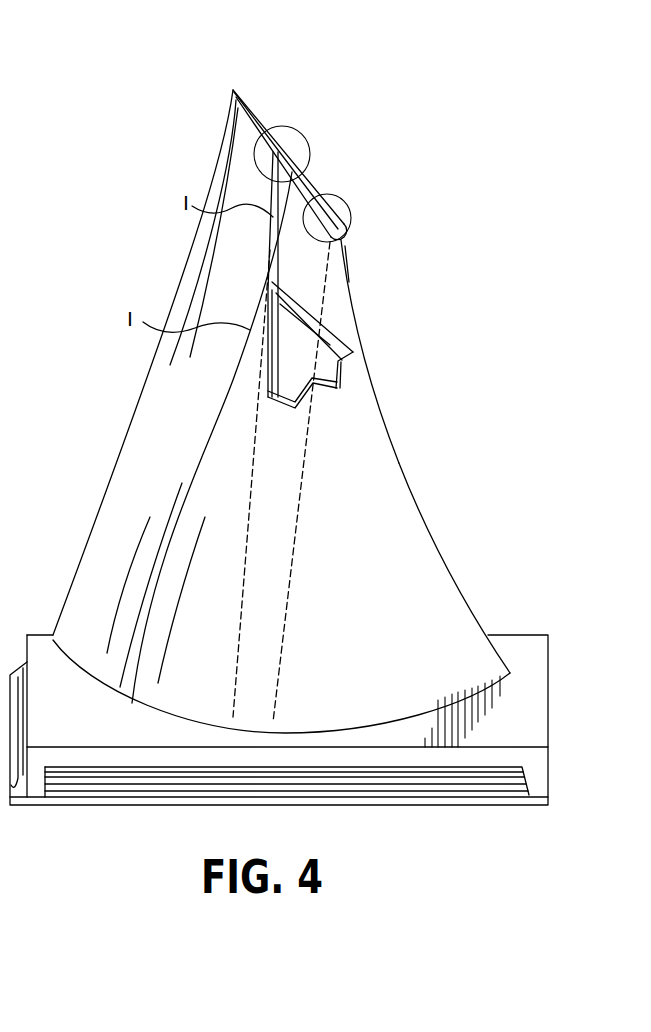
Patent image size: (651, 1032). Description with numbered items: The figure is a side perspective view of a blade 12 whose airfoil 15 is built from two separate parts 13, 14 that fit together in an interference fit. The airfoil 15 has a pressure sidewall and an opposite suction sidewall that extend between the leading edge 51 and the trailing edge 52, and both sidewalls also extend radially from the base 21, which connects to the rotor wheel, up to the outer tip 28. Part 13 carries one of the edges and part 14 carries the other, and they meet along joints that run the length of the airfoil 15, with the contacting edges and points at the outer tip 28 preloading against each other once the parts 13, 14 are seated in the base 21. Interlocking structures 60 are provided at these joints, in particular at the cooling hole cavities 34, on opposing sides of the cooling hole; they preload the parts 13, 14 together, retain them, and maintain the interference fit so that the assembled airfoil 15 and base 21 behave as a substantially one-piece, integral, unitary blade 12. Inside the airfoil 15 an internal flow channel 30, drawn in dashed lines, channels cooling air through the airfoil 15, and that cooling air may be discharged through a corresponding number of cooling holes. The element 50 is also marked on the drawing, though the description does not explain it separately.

The blade 12 is at (415, 94).
The part 13 is at (121, 571).
The part 14 is at (327, 604).
The airfoil 15 is at (402, 327).
The base 21 is at (548, 693).
The outer tip 28 is at (248, 98).
The internal flow channel 30 is at (263, 663).
The cooling hole cavity 34 is at (328, 185).
The trailing edge 50 is at (461, 594).
The leading edge 51 is at (200, 258).
The trailing edge 52 is at (394, 458).
The interlocking structure 60 is at (293, 130).